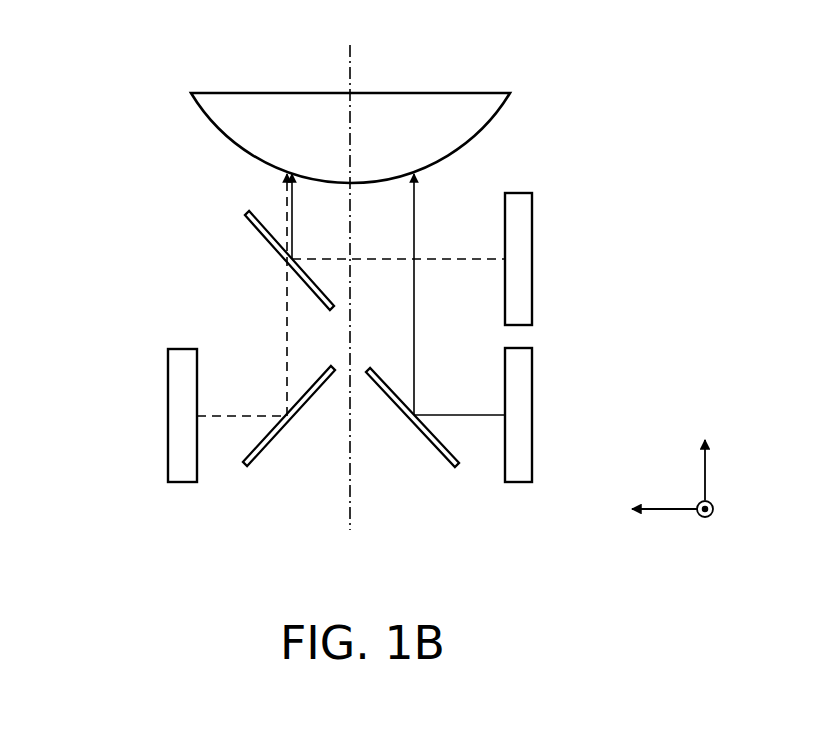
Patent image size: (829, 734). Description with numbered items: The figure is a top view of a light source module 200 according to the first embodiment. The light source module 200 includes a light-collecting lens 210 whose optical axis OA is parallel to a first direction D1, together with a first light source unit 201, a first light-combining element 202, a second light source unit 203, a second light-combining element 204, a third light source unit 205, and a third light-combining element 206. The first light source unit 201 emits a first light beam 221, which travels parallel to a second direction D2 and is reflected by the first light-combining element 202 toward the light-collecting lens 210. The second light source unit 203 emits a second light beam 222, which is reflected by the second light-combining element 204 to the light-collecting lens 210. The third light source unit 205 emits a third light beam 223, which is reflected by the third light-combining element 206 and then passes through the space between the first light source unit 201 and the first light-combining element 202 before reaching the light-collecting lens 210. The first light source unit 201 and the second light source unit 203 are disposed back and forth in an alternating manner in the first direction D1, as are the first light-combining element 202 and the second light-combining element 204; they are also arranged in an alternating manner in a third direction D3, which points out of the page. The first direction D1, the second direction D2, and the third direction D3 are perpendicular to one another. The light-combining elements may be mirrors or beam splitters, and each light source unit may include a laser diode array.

The light source module 200 is at (647, 70).
The optical axis OA is at (350, 48).
The light-collecting lens 210 is at (447, 133).
The first light source unit 201 is at (520, 266).
The first light-combining element 202 is at (252, 231).
The second light source unit 203 is at (181, 414).
The second light-combining element 204 is at (263, 444).
The third light source unit 205 is at (520, 414).
The third light-combining element 206 is at (428, 442).
The first light beam 221 is at (462, 261).
The second light beam 222 is at (287, 300).
The third light beam 223 is at (414, 218).
The first direction D1 is at (704, 451).
The second direction D2 is at (646, 510).
The third direction D3 is at (708, 530).